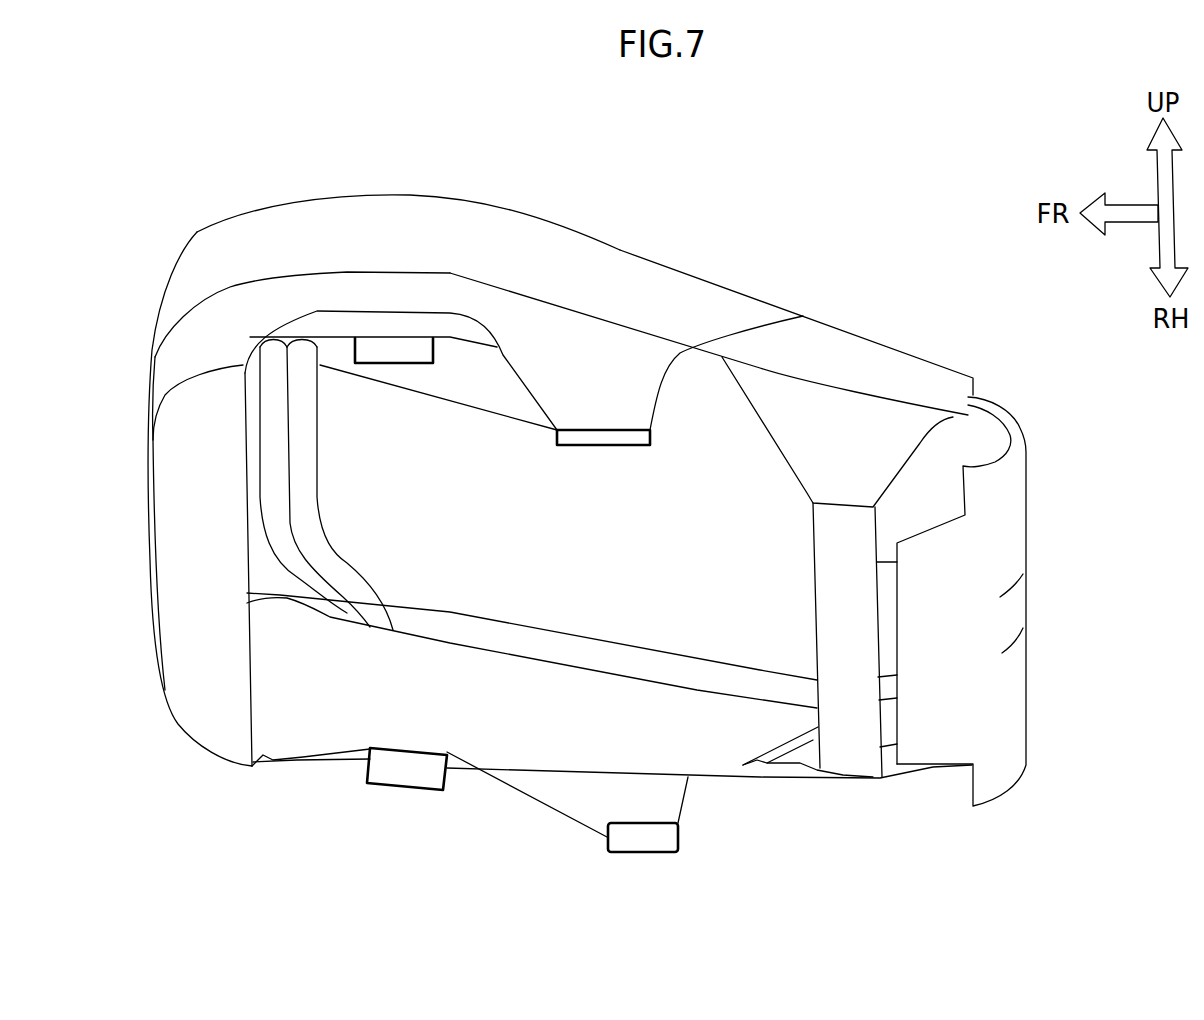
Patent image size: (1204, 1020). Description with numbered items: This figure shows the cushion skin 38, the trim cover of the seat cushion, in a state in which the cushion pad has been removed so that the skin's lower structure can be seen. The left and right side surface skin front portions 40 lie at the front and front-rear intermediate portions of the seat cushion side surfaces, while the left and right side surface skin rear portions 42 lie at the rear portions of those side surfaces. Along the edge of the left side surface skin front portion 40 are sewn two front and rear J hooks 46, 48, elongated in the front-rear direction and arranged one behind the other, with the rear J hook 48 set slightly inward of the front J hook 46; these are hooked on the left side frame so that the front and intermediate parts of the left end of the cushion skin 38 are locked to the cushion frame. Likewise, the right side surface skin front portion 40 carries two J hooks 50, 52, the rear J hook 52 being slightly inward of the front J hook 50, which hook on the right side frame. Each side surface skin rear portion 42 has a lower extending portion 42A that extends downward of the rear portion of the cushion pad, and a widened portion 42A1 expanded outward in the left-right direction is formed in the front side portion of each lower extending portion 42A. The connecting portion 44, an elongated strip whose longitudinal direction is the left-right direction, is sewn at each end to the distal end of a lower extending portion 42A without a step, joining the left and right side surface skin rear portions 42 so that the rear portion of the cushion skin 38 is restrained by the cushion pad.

The cushion skin 38 is at (197, 230).
The side surface skin front portion 40 is at (493, 232).
The side surface skin rear portion 42 is at (913, 378).
The lower extending portion 42A is at (807, 440).
The widened portion 42A1 is at (763, 357).
The connecting portion 44 is at (853, 640).
The J hook 46 is at (395, 347).
The J hook 48 is at (607, 427).
The J hook 50 is at (403, 783).
The J hook 52 is at (643, 850).